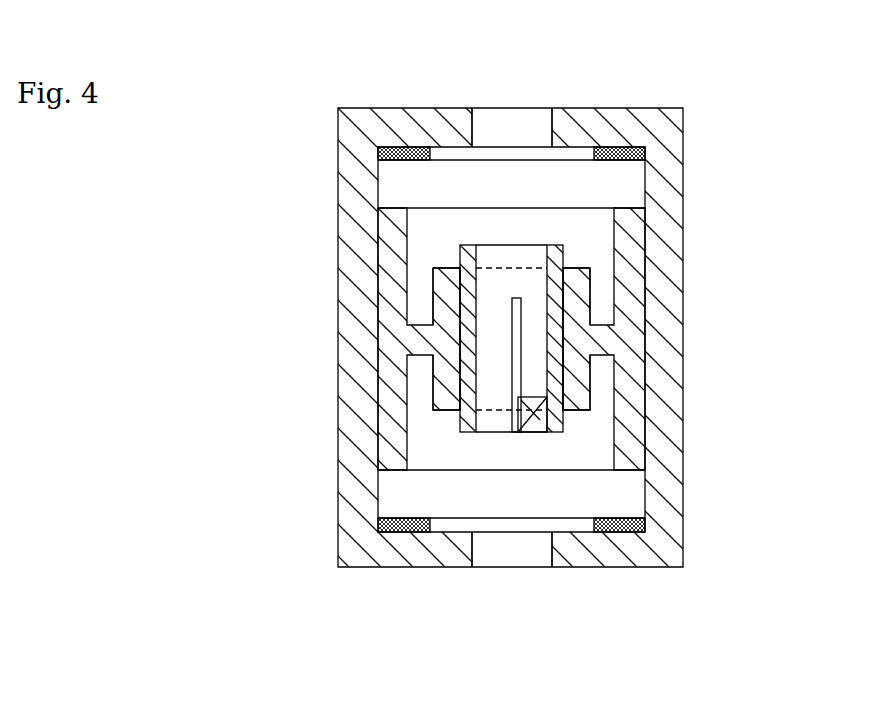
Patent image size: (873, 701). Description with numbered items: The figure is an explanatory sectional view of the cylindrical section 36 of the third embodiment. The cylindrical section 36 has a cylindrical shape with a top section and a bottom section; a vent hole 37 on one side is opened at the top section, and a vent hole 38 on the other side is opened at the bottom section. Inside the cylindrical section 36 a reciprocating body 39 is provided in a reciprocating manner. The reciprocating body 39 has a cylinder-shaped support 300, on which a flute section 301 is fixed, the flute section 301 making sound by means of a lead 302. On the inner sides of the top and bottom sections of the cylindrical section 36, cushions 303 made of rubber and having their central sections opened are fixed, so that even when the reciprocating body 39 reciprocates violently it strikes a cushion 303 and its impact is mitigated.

The cylindrical section 36 is at (683, 253).
The vent hole 37 is at (513, 130).
The vent hole 38 is at (513, 550).
The reciprocating body 39 is at (443, 245).
The cylinder-shaped support 300 is at (443, 311).
The flute section 301 is at (460, 414).
The lead 302 is at (517, 345).
The cushion 303 is at (645, 152).